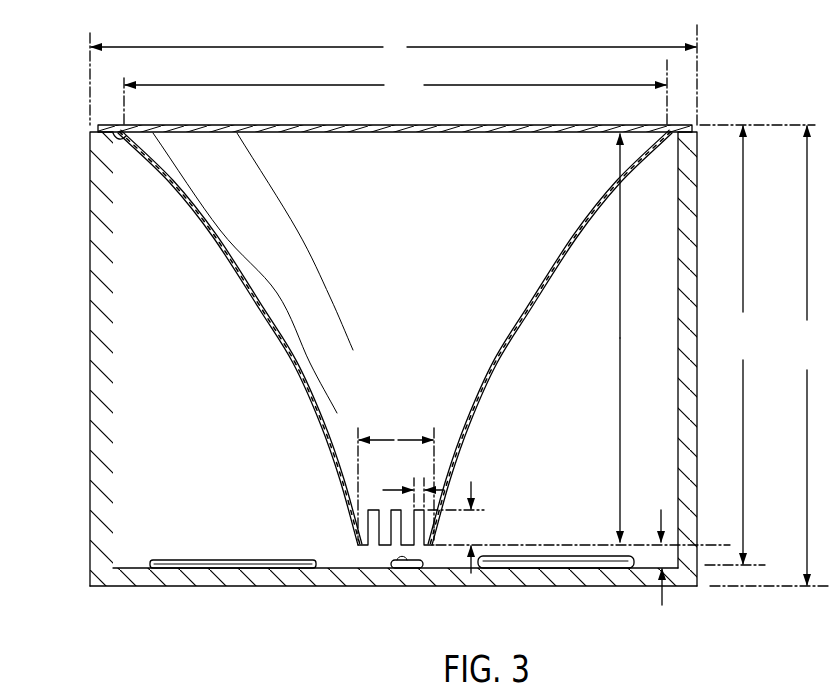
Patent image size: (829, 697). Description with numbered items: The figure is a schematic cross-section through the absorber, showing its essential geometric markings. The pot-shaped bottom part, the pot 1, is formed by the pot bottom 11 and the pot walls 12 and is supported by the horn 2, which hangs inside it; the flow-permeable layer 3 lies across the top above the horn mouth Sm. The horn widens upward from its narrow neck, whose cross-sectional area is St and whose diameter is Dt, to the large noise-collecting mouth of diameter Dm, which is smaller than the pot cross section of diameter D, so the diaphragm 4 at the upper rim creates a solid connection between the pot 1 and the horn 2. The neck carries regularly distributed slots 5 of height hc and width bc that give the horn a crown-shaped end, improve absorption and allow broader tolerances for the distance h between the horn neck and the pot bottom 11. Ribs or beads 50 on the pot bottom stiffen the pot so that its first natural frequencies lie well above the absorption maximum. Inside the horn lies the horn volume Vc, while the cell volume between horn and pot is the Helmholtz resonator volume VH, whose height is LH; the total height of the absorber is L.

The pot 1 is at (86, 565).
The horn 2 is at (263, 318).
The permeable layer 3 is at (186, 126).
The diaphragm 4 is at (100, 152).
The slot 5 is at (355, 532).
The pot bottom 11 is at (210, 578).
The pot wall 12 is at (90, 345).
The ribs or beads 50 is at (185, 560).
The total diameter of absorber D is at (393, 75).
The diameter of horn mouth Dm is at (395, 92).
The cross-sectional area of horn mouth Sm is at (467, 121).
The diameter of horn neck Dt is at (394, 437).
The slot width bc is at (423, 478).
The slot height hc is at (579, 527).
The distance between horn and pot bottom h is at (662, 552).
The height of Helmholtz resonator volume LH is at (757, 345).
The total height of absorber L is at (769, 356).
The horn volume Vc is at (485, 274).
The Helmholtz resonator volume VH is at (577, 427).
The cross-sectional area of horn neck St is at (378, 551).